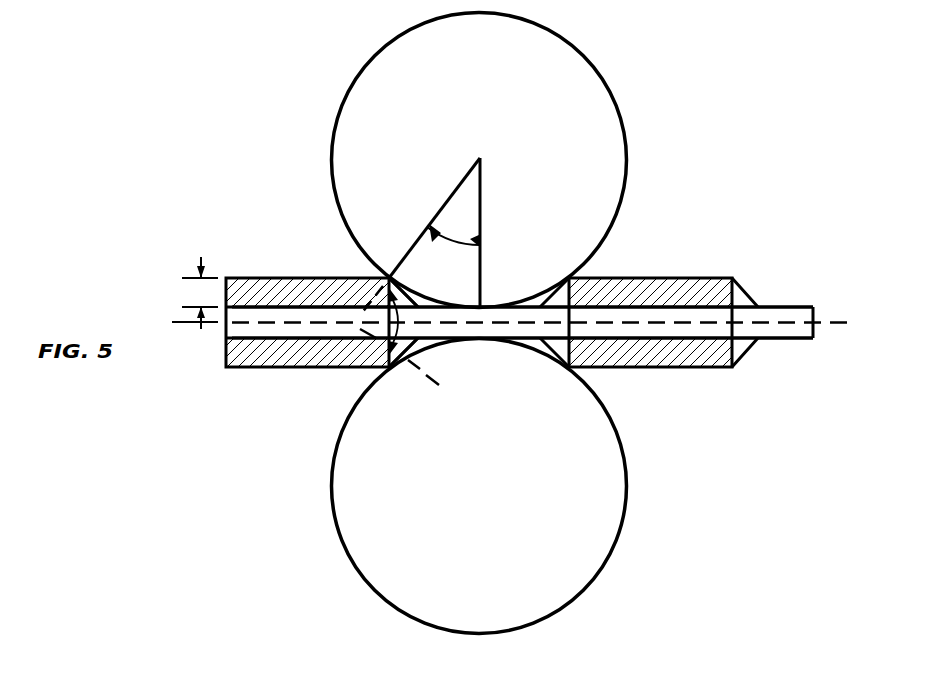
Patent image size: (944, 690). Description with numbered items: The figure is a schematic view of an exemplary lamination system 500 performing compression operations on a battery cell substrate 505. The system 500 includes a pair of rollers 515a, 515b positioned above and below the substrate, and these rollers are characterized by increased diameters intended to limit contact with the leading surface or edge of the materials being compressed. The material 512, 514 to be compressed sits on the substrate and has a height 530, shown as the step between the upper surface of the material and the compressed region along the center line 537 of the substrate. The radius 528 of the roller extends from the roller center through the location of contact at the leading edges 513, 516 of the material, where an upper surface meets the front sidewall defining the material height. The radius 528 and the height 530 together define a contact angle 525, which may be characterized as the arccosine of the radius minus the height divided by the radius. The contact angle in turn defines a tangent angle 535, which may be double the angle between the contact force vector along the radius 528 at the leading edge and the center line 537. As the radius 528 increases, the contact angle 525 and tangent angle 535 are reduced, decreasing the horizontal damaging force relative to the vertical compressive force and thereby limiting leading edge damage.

The lamination system 500 is at (203, 78).
The battery cell substrate 505 is at (793, 307).
The material to be compressed 512 is at (690, 279).
The leading edge 513 is at (386, 276).
The material to be compressed 514 is at (685, 368).
The roller 515a is at (623, 128).
The roller 515b is at (620, 528).
The leading edge 516 is at (380, 360).
The contact angle 525 is at (480, 215).
The radius 528 is at (463, 178).
The height 530 is at (201, 257).
The tangent angle 535 is at (400, 318).
The center line 537 is at (247, 323).